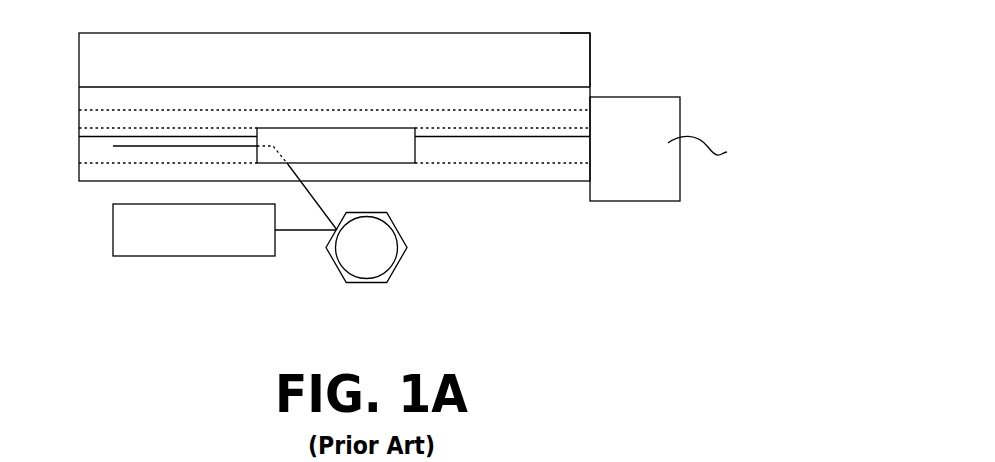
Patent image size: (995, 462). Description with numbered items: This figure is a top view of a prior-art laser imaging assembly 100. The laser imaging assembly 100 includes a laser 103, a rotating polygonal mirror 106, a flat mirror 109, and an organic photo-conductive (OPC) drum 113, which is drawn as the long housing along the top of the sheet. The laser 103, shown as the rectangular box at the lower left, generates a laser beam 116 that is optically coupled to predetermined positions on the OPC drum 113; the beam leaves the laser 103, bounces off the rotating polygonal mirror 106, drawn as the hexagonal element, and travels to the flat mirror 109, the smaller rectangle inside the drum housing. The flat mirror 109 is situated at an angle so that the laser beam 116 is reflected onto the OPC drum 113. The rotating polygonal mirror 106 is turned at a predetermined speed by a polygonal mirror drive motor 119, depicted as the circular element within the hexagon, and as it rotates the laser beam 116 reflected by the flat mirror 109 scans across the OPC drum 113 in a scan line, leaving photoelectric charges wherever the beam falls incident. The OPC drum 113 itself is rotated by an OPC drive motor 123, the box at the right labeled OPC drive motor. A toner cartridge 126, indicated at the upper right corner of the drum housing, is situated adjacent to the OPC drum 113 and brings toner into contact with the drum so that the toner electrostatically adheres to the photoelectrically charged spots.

The laser imaging assembly 100 is at (615, 273).
The laser 103 is at (219, 265).
The rotating polygonal mirror 106 is at (405, 273).
The flat mirror 109 is at (380, 176).
The organic photo-conductive (OPC) drum 113 is at (98, 192).
The laser beam 116 is at (301, 242).
The polygonal mirror drive motor 119 is at (366, 272).
The OPC drive motor 123 is at (640, 86).
The toner cartridge 126 is at (600, 60).